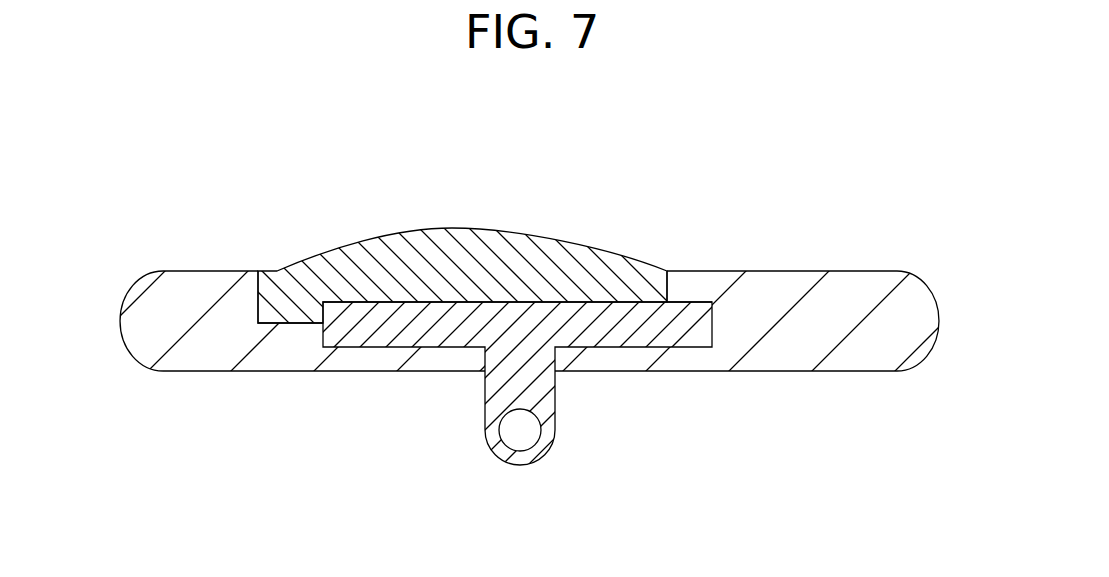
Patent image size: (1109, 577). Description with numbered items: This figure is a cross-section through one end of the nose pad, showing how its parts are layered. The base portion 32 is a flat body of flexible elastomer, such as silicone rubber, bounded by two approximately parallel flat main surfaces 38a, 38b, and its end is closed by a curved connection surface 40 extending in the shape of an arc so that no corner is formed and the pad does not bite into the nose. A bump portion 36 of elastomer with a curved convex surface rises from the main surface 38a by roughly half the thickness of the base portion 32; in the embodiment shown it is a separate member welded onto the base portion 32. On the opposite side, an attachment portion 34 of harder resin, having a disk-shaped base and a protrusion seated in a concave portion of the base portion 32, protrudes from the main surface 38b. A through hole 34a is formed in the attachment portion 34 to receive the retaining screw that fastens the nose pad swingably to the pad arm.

The base portion 32 is at (786, 346).
The attachment portion 34 is at (485, 393).
The through hole 34a is at (523, 435).
The bump portion 36 is at (452, 242).
The main surface 38a is at (797, 270).
The main surface 38b is at (857, 371).
The connection surface 40 is at (121, 312).